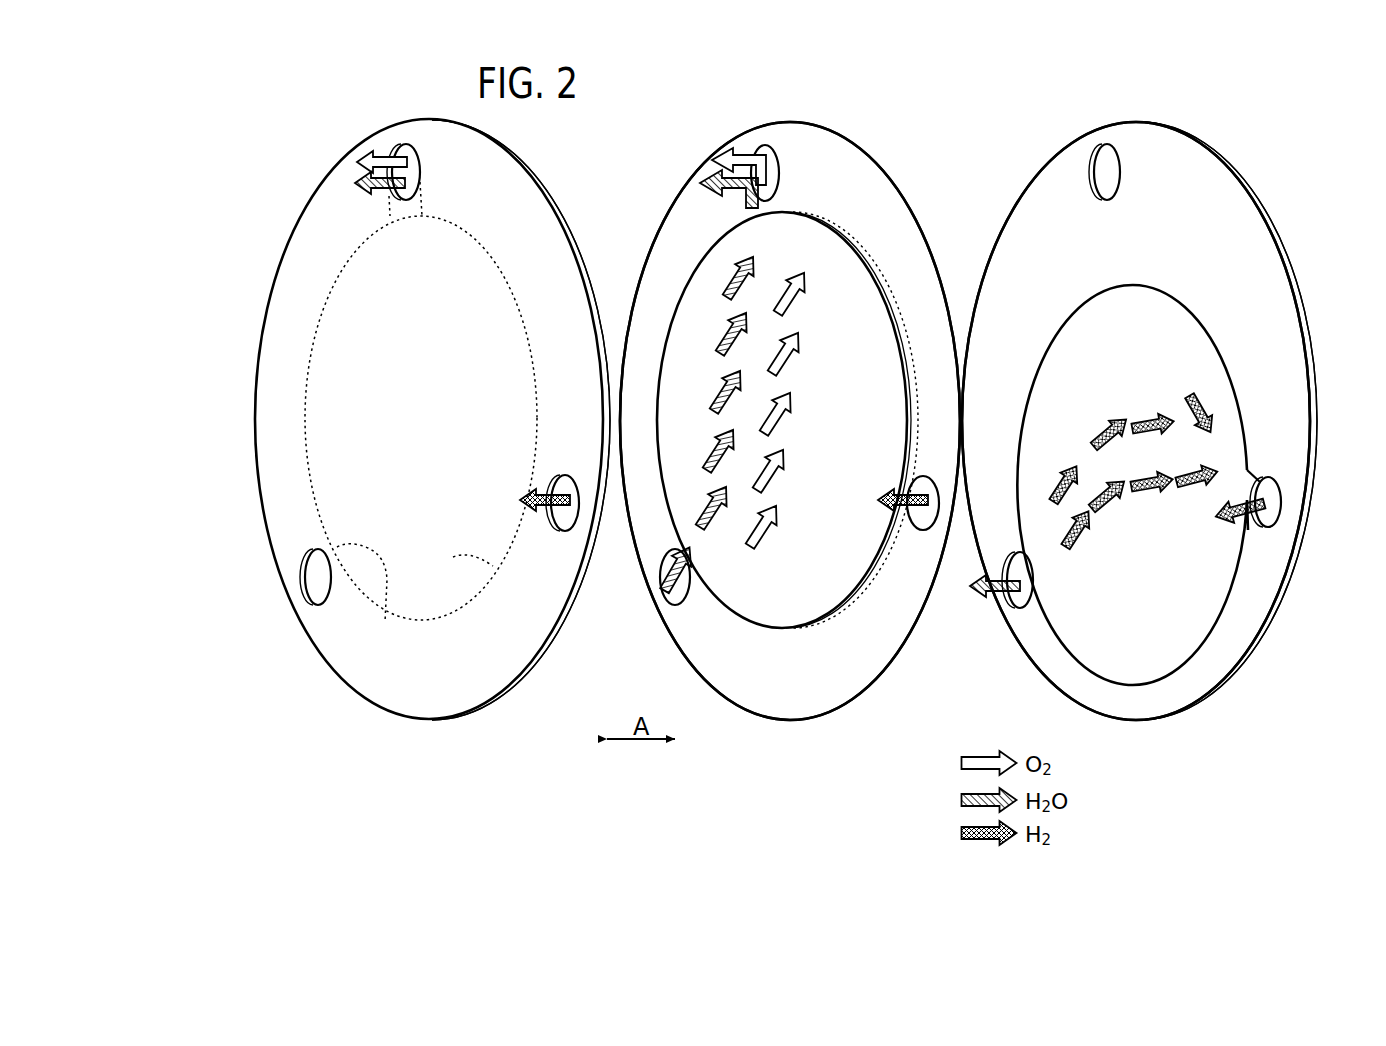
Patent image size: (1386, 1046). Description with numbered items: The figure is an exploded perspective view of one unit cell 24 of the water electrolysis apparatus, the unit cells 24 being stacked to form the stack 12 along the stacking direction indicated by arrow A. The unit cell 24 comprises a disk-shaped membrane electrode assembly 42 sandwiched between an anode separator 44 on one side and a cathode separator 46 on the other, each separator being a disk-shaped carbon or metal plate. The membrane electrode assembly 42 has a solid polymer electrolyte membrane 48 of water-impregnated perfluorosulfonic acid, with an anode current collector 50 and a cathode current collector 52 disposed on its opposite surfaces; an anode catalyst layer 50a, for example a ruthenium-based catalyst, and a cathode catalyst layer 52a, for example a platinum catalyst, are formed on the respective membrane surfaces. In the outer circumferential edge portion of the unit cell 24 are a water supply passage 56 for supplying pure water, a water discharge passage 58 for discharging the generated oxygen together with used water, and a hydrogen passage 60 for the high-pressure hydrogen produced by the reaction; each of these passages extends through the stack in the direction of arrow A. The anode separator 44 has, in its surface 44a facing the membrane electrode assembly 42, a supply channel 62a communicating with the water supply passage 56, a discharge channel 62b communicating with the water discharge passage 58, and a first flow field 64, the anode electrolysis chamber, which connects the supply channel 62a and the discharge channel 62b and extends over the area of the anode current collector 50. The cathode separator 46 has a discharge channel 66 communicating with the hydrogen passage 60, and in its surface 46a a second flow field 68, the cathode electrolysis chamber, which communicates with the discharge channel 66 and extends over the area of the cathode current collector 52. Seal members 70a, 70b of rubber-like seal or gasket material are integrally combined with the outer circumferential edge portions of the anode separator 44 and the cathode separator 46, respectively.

The unit cell 24 is at (667, 96).
The fuel cell stack 12 is at (703, 96).
The membrane electrode assembly 42 is at (838, 131).
The anode separator 44 is at (541, 181).
The surface of the anode separator 44a is at (282, 386).
The cathode separator 46 is at (1234, 166).
The surface of the cathode separator 46a is at (1006, 240).
The solid polymer electrolyte membrane 48 is at (838, 685).
The anode current collector 50 is at (755, 605).
The anode catalyst layer 50a is at (819, 457).
The cathode current collector 52 is at (850, 172).
The cathode catalyst layer 52a is at (838, 255).
The water supply passage 56 is at (310, 565).
The water discharge passage 58 is at (398, 155).
The hydrogen passage 60 is at (550, 515).
The supply channel 62a is at (374, 599).
The discharge channel 62b is at (388, 213).
The first flow field 64 is at (493, 566).
The discharge channel 66 is at (1246, 485).
The second flow field 68 is at (1193, 330).
The seal member 70a is at (505, 657).
The seal member 70b is at (1252, 627).